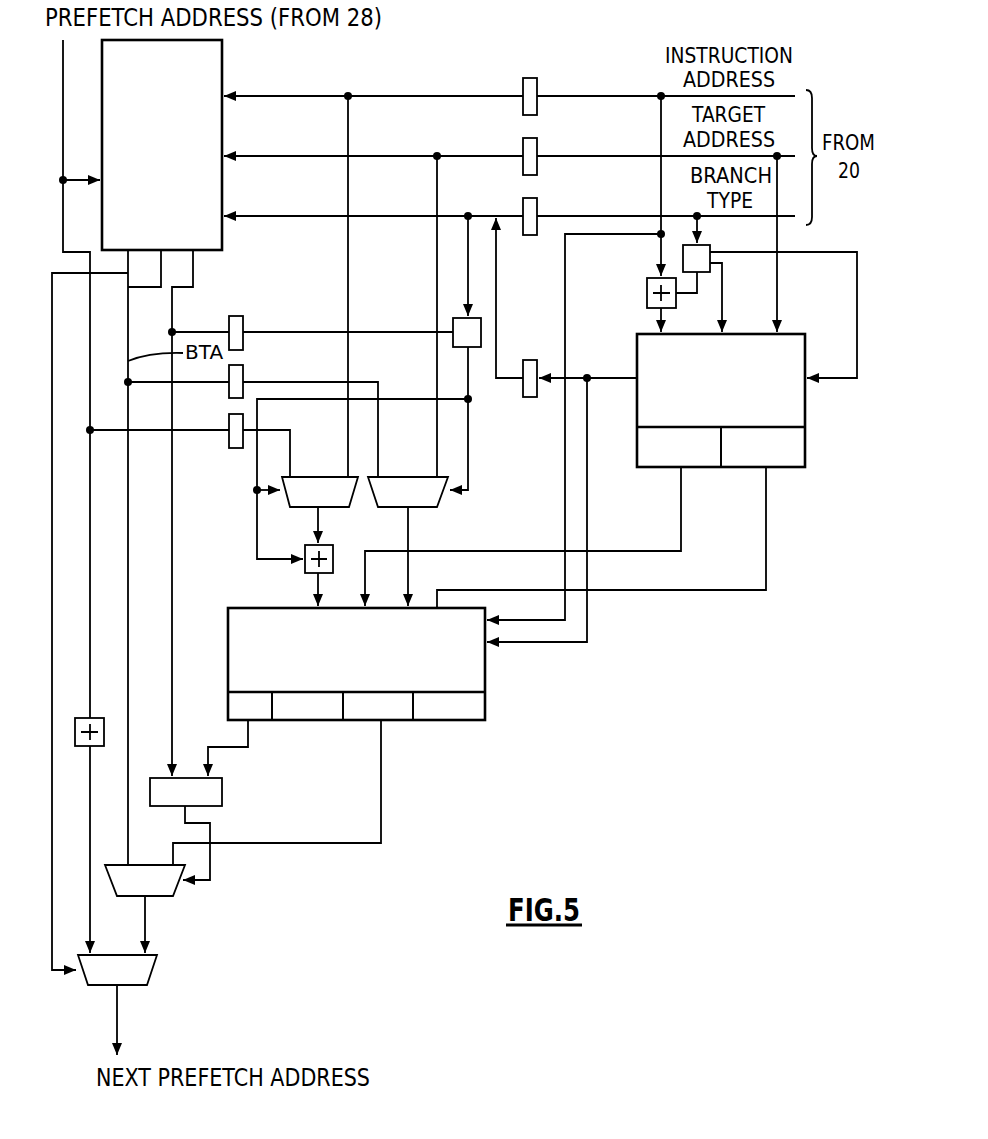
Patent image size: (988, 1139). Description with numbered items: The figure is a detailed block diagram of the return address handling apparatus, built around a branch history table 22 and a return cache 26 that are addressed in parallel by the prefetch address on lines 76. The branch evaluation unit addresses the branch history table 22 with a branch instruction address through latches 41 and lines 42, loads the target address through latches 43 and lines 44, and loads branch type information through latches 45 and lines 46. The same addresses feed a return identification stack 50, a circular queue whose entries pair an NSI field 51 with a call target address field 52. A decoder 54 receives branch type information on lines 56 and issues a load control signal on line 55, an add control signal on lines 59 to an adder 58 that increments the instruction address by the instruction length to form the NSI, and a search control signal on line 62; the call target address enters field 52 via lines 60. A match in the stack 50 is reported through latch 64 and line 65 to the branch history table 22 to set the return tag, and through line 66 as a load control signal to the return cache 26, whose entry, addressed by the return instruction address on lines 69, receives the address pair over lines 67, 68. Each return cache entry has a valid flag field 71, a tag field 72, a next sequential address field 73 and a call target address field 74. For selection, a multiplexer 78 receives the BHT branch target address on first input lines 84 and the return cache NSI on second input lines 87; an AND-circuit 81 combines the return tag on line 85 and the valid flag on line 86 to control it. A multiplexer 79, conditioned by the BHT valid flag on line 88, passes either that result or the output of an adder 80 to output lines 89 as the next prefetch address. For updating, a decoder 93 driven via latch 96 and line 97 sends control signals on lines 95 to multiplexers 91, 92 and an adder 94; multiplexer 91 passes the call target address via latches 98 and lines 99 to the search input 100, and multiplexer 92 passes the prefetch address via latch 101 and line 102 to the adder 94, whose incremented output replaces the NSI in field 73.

The branch history table 22 is at (222, 63).
The return cache 26 is at (387, 684).
The latches 41 is at (537, 86).
The lines 42 is at (418, 96).
The latches 43 is at (537, 146).
The lines 44 is at (455, 156).
The latches 45 is at (537, 206).
The lines 46 is at (485, 216).
The return identification stack 50 is at (737, 420).
The NSI field 51 is at (657, 468).
The call target address field 52 is at (788, 468).
The decoder 54 is at (710, 250).
The line 55 is at (818, 252).
The lines 56 is at (692, 212).
The adder 58 is at (647, 293).
The lines 59 is at (700, 286).
The lines 60 is at (777, 292).
The line 62 is at (722, 313).
The latch 64 is at (528, 400).
The line 65 is at (496, 318).
The line 66 is at (558, 642).
The lines 67 is at (681, 537).
The lines 68 is at (766, 565).
The lines 69 is at (630, 238).
The valid flag field 71 is at (258, 720).
The tag field 72 is at (320, 720).
The next sequential address field 73 is at (397, 720).
The call target address field 74 is at (467, 720).
The lines 76 is at (63, 127).
The multiplexer 78 is at (165, 897).
The multiplexer 79 is at (147, 975).
The adder 80 is at (100, 718).
The AND-circuit 81 is at (222, 792).
The first input lines 84 is at (128, 515).
The line 85 is at (193, 272).
The line 86 is at (235, 747).
The second input lines 87 is at (304, 843).
The line 88 is at (103, 273).
The output lines 89 is at (117, 1021).
The multiplexer 91 is at (423, 476).
The multiplexer 92 is at (335, 476).
The decoder 93 is at (459, 316).
The adder 94 is at (306, 574).
The lines 95 is at (465, 386).
The latch 96 is at (243, 322).
The line 97 is at (362, 332).
The latches 98 is at (243, 372).
The lines 99 is at (362, 382).
The search input 100 is at (408, 569).
The latch 101 is at (229, 416).
The line 102 is at (275, 430).